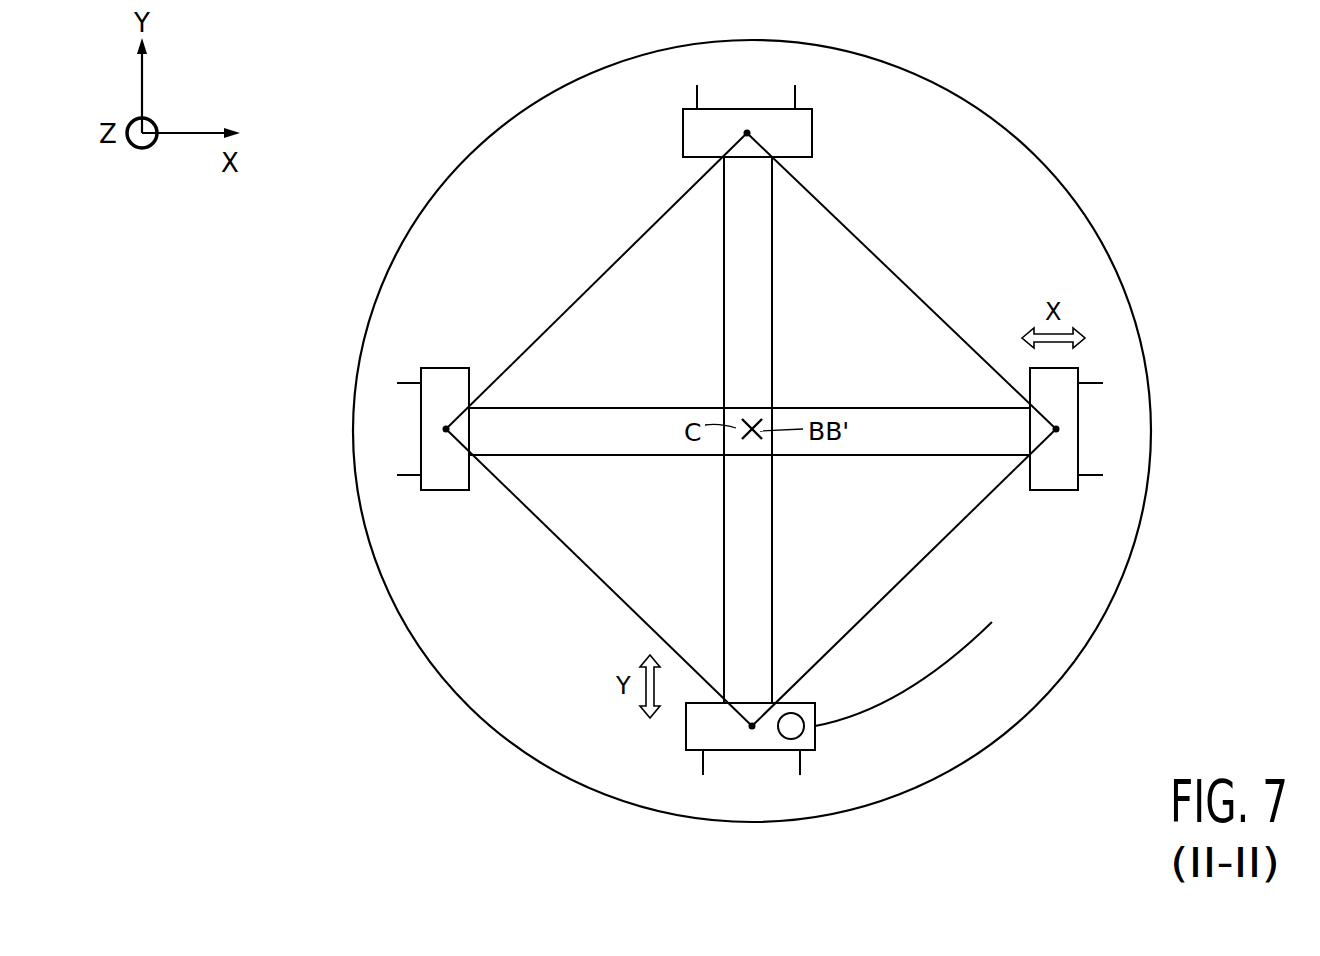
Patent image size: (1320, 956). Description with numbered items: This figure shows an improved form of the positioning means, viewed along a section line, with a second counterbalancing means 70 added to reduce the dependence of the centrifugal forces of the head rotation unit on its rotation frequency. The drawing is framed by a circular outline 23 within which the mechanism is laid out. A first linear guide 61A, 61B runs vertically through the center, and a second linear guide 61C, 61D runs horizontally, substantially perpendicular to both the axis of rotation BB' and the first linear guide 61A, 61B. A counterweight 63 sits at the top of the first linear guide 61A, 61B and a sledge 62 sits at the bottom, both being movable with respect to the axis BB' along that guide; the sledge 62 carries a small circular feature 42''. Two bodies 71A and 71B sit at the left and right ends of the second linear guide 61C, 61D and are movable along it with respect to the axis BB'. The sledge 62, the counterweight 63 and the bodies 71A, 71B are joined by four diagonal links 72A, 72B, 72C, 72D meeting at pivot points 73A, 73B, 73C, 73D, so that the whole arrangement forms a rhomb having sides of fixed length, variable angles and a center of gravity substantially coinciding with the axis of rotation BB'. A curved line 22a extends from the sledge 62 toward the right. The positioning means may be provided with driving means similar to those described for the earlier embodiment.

The wafer stage outline 23 is at (480, 138).
The second counterbalancing means 70 is at (1020, 172).
The counterweight 63 is at (683, 139).
The sledge 62 is at (686, 742).
The connection point A 73A is at (752, 729).
The connection point B 73B is at (747, 130).
The connection point C 73C is at (446, 432).
The connection point D 73D is at (1056, 432).
The body 71A is at (421, 420).
The body 71B is at (1078, 420).
The first linear guide 61A is at (724, 300).
The first linear guide 61B is at (772, 300).
The second linear guide 61C is at (620, 408).
The second linear guide 61D is at (621, 456).
The diagonal link A 72A is at (580, 567).
The diagonal link B 72B is at (580, 296).
The diagonal link C 72C is at (918, 296).
The diagonal link D 72D is at (920, 567).
The guide arc 22a is at (952, 662).
The pivot 42'' is at (833, 736).